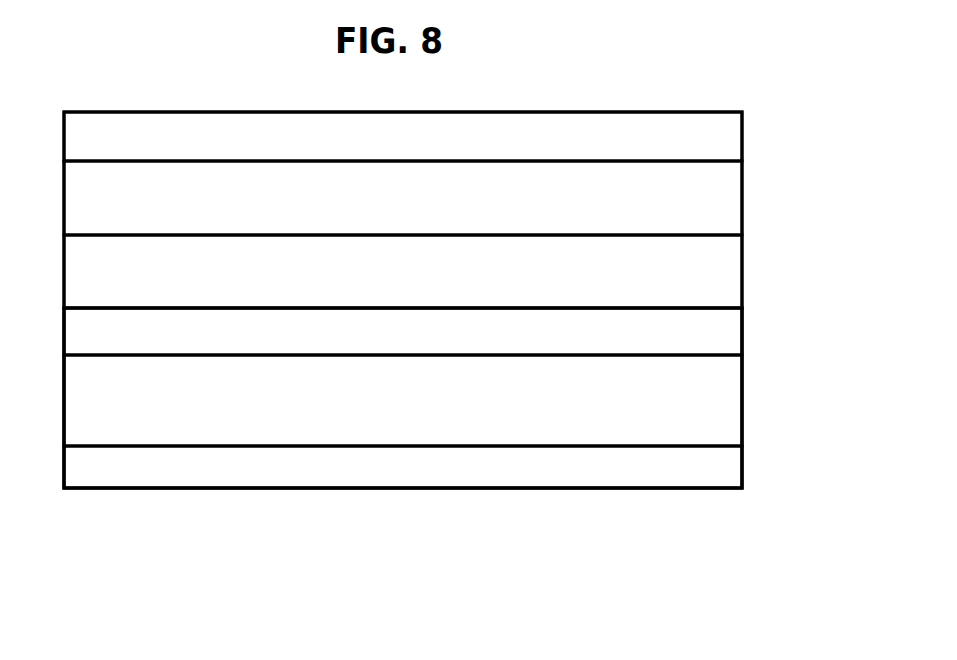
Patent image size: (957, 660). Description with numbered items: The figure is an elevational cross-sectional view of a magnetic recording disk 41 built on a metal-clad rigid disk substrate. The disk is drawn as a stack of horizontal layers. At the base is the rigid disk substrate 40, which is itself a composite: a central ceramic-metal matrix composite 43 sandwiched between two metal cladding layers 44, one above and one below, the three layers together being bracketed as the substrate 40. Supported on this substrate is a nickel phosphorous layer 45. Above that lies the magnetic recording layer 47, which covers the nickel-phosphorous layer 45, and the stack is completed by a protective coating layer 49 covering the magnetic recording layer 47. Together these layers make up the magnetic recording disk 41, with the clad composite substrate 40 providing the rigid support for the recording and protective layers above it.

The magnetic recording disk 41 is at (104, 548).
The protective coating layer 49 is at (723, 142).
The magnetic recording layer 47 is at (723, 209).
The nickel phosphorous layer 45 is at (723, 276).
The metal cladding layers 44 is at (723, 336).
The ceramic-metal matrix composite 43 is at (723, 407).
The rigid disk substrate 40 is at (812, 303).